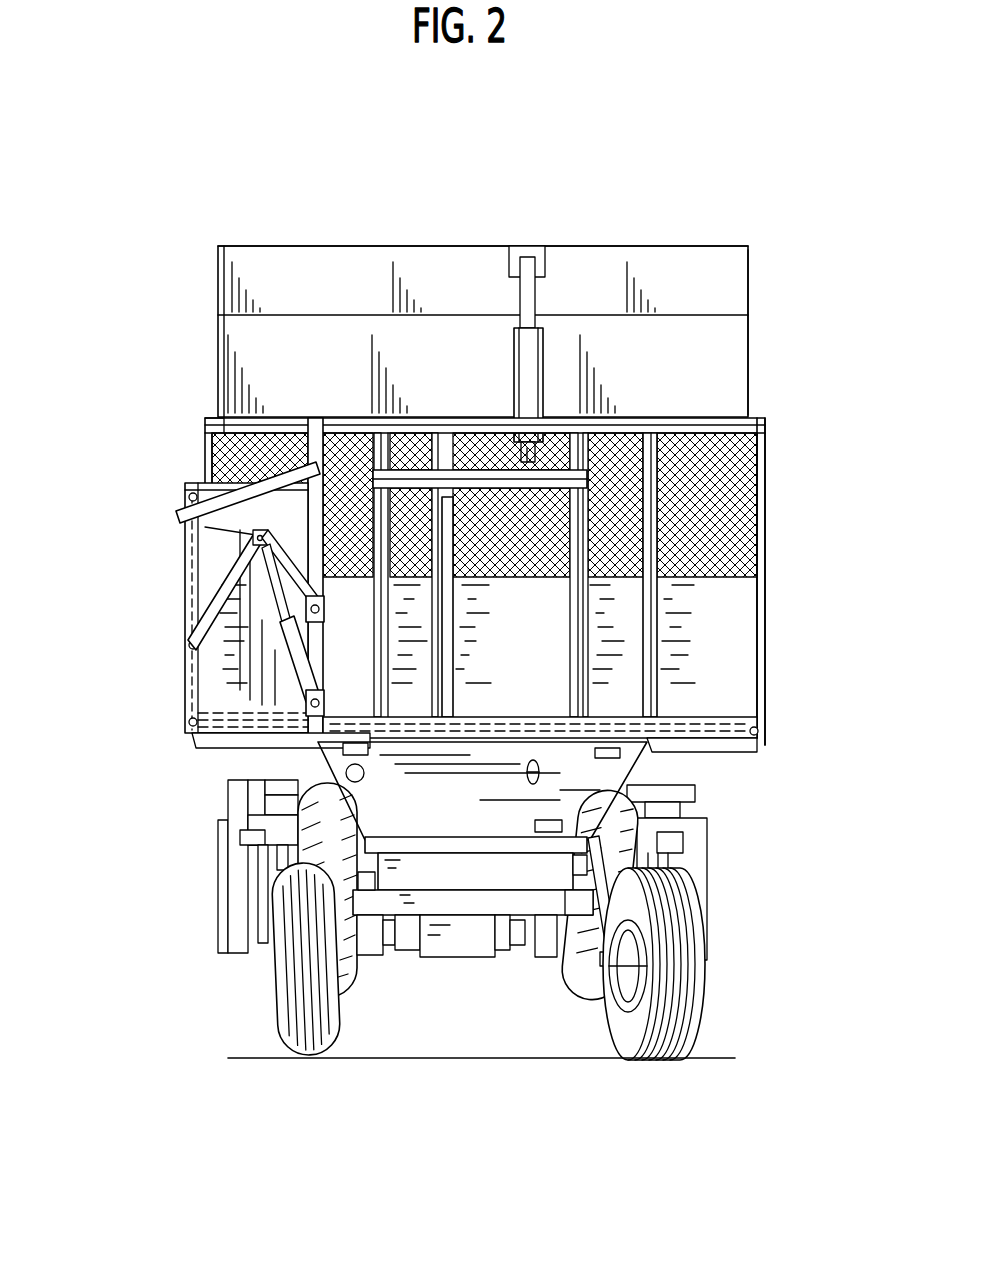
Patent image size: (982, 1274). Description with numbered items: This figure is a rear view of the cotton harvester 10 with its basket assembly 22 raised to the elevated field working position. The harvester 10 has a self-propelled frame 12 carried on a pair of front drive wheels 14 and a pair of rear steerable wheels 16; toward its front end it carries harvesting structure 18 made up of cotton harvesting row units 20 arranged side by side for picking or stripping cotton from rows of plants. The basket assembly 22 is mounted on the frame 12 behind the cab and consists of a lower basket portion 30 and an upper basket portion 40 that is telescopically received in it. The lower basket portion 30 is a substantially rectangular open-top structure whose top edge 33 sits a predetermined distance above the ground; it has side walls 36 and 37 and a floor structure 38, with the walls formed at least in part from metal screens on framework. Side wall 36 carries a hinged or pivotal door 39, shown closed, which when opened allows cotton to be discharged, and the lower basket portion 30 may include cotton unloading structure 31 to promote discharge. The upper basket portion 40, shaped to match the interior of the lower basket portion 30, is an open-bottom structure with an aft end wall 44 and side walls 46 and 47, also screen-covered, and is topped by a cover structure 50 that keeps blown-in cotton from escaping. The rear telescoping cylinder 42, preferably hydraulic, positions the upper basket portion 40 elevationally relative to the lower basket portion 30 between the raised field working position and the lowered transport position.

The cotton harvester 10 is at (760, 183).
The self-propelled frame 12 is at (409, 816).
The front drive wheels 14 is at (345, 990).
The rear steerable wheels 16 is at (303, 1045).
The harvesting structure 18 is at (722, 803).
The cotton harvesting row units 20 is at (237, 795).
The basket assembly 22 is at (198, 427).
The lower basket portion 30 is at (212, 680).
The cotton unloading structure 31 is at (722, 718).
The top edge 33 is at (207, 417).
The side wall 36 is at (205, 458).
The side wall 37 is at (767, 462).
The floor structure 38 is at (487, 715).
The door 39 is at (183, 595).
The upper basket portion 40 is at (333, 246).
The telescoping cylinders 42 is at (518, 345).
The aft end wall 44 is at (336, 383).
The side wall 46 is at (218, 345).
The side wall 47 is at (748, 357).
The top or cover structure 50 is at (568, 246).